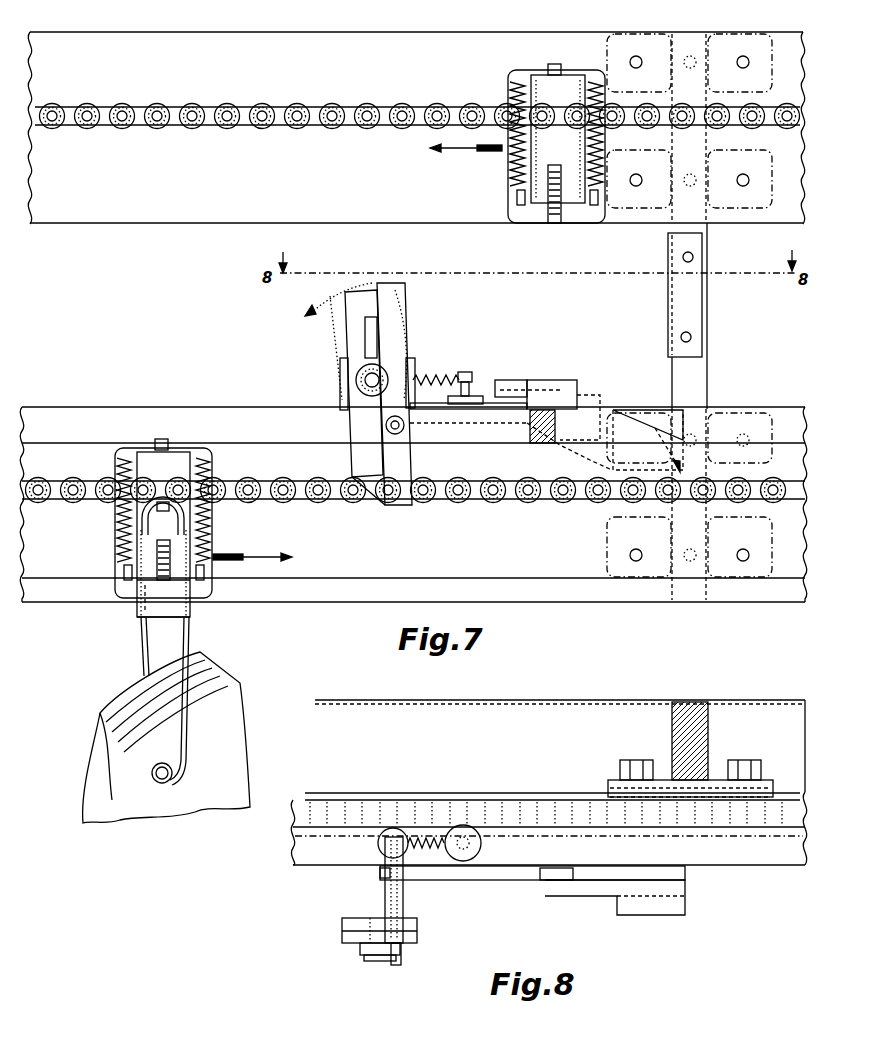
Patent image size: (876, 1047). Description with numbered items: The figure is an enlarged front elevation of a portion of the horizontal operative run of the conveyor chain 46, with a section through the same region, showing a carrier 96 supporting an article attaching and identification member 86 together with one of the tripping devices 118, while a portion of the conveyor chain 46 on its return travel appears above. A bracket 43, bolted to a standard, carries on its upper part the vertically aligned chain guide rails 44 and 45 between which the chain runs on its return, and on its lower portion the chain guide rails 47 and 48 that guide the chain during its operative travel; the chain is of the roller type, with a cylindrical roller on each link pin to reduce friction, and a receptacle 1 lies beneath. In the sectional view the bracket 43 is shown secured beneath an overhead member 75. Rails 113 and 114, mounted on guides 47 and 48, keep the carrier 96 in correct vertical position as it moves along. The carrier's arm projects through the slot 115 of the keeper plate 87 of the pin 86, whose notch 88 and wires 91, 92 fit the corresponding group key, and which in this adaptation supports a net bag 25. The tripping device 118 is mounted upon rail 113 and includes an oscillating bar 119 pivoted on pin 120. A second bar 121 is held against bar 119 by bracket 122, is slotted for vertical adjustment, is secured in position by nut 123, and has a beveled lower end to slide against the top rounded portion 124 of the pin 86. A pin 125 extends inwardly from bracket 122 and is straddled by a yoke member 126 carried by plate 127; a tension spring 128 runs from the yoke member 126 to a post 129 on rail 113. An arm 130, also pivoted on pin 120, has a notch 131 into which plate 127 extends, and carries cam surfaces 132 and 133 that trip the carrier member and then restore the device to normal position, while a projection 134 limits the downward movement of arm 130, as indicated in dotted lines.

In FIG. 7, the receptacle 1 is at (689, 128).
In FIG. 7, the bag 25 is at (228, 742).
In FIG. 7, the bracket 43 is at (704, 331).
In FIG. 8, the bracket 43 is at (710, 731).
In FIG. 7, the chain guide rail 44 is at (346, 42).
In FIG. 7, the chain guide rail 45 is at (212, 212).
In FIG. 7, the conveyor chain 46 is at (246, 111).
In FIG. 8, the conveyor chain 46 is at (478, 816).
In FIG. 7, the chain guide rail 47 is at (198, 425).
In FIG. 8, the chain guide rail 47 is at (334, 804).
In FIG. 7, the chain guide rail 48 is at (61, 556).
In FIG. 8, the board 75 is at (752, 702).
In FIG. 7, the article attaching and identification member 86 is at (200, 610).
In FIG. 7, the keeper plate 87 is at (171, 616).
In FIG. 7, the notch 88 is at (152, 622).
In FIG. 7, the wire 91 is at (140, 660).
In FIG. 7, the wire 92 is at (190, 638).
In FIG. 7, the carrier 96 is at (116, 458).
In FIG. 7, the rail 113 is at (56, 407).
In FIG. 8, the rail 113 is at (300, 850).
In FIG. 7, the rail 114 is at (576, 602).
In FIG. 7, the slot 115 is at (138, 605).
In FIG. 7, the tripping device 118 is at (468, 440).
In FIG. 8, the tripping device 118 is at (455, 888).
In FIG. 7, the oscillating bar 119 is at (406, 328).
In FIG. 8, the oscillating bar 119 is at (394, 890).
In FIG. 7, the pin 120 is at (405, 425).
In FIG. 8, the pin 120 is at (396, 966).
In FIG. 7, the second bar 121 is at (350, 342).
In FIG. 8, the second bar 121 is at (355, 938).
In FIG. 7, the bracket 122 is at (342, 366).
In FIG. 8, the bracket 122 is at (342, 920).
In FIG. 7, the nut 123 is at (364, 380).
In FIG. 8, the nut 123 is at (370, 960).
In FIG. 7, the top rounded portion 124 is at (161, 502).
In FIG. 7, the pin 125 is at (406, 300).
In FIG. 8, the pin 125 is at (386, 898).
In FIG. 7, the yoke member 126 is at (414, 380).
In FIG. 8, the yoke member 126 is at (386, 834).
In FIG. 7, the plate 127 is at (492, 410).
In FIG. 8, the plate 127 is at (484, 867).
In FIG. 7, the tension spring 128 is at (460, 372).
In FIG. 8, the tension spring 128 is at (432, 838).
In FIG. 7, the post 129 is at (470, 374).
In FIG. 8, the post 129 is at (470, 838).
In FIG. 7, the arm 130 is at (565, 386).
In FIG. 8, the arm 130 is at (430, 880).
In FIG. 7, the notch 131 is at (542, 410).
In FIG. 7, the cam surface 132 is at (544, 444).
In FIG. 8, the cam surface 132 is at (546, 882).
In FIG. 7, the cam surface 133 is at (690, 405).
In FIG. 8, the cam surface 133 is at (648, 908).
In FIG. 7, the projection 134 is at (508, 380).